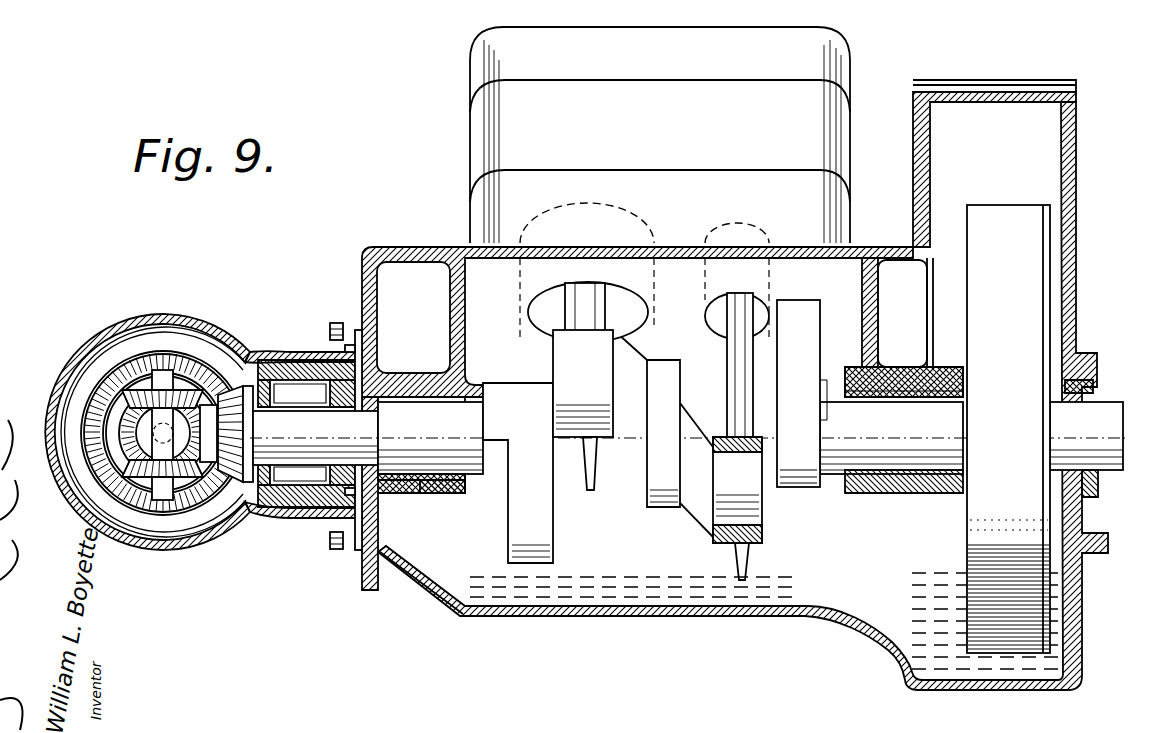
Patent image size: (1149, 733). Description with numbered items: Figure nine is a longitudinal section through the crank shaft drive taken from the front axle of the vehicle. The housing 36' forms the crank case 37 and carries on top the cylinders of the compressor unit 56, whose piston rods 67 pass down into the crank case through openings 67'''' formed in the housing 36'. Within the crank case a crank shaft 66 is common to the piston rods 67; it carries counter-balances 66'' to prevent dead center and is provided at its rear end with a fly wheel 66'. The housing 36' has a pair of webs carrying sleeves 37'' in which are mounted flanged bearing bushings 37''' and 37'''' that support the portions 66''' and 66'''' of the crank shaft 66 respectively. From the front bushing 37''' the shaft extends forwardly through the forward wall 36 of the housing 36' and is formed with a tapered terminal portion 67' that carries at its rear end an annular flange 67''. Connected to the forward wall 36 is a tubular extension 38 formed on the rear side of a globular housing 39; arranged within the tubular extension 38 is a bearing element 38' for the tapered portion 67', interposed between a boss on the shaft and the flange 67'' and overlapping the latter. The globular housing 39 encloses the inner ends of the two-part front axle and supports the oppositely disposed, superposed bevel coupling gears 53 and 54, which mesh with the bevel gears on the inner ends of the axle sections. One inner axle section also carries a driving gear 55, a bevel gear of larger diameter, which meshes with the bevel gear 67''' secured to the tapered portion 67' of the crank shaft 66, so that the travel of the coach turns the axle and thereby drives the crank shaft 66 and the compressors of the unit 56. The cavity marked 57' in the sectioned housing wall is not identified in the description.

The forward wall 36 is at (699, 385).
The housing 36' is at (766, 621).
The crank case 37 is at (421, 591).
The sleeves 37'' is at (691, 513).
The flanged bearing bushing 37''' is at (421, 505).
The flanged bearing bushing 37'''' is at (884, 459).
The tubular extension 38 is at (286, 428).
The bearing element 38' is at (305, 466).
The globular housing 39 is at (206, 308).
The coupling gear 53 is at (210, 358).
The coupling gear 54 is at (116, 495).
The driving gear 55 is at (83, 462).
The unit 56 is at (848, 78).
The housing cavity 57' is at (675, 317).
The crank shaft 66 is at (598, 448).
The fly wheel 66' is at (1008, 412).
The counter-balances 66'' is at (821, 393).
The crank shaft portion 66''' is at (450, 407).
The crank shaft portion 66'''' is at (971, 411).
The piston rods 67 is at (762, 423).
The tapered terminal portion 67' is at (315, 381).
The annular flange 67'' is at (392, 418).
The bevel gear 67''' is at (250, 396).
The openings 67'''' is at (560, 385).